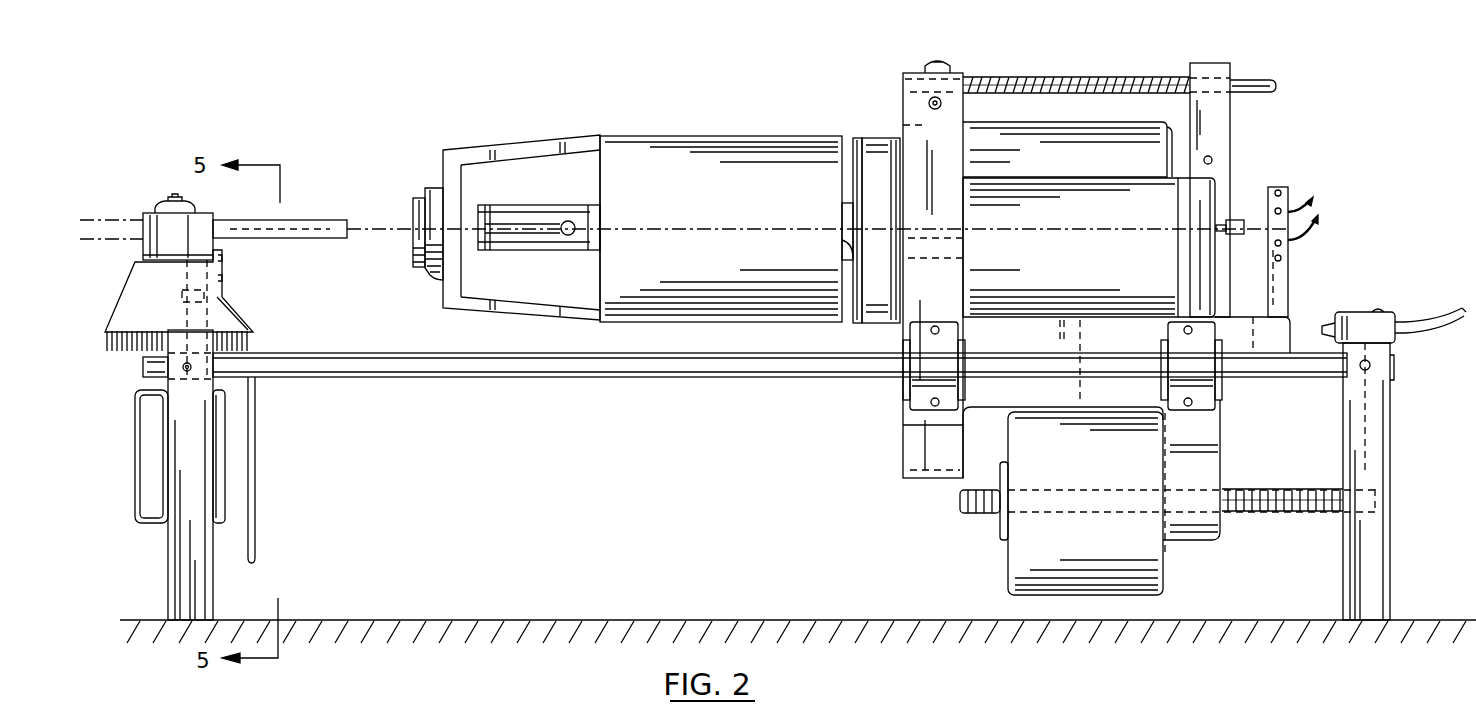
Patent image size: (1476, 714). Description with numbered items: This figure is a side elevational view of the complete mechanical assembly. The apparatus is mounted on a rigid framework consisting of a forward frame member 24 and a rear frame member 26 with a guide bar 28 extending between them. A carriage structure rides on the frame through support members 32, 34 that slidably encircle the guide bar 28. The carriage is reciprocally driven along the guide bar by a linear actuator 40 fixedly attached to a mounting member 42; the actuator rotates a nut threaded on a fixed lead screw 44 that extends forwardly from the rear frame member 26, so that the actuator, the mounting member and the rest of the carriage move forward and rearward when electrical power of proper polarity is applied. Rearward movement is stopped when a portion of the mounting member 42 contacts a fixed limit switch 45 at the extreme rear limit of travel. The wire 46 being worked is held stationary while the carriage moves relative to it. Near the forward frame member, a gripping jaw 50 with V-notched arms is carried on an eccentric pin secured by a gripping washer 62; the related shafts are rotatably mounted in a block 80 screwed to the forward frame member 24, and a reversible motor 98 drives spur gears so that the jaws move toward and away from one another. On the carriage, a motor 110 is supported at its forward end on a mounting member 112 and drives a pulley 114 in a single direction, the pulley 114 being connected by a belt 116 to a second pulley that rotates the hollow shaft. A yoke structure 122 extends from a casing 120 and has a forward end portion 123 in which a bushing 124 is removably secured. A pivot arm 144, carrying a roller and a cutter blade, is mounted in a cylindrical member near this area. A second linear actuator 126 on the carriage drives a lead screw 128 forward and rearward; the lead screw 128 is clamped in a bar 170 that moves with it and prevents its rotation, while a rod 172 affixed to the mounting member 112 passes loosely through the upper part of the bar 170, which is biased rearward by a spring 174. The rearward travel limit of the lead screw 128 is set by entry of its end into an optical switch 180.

The forward frame member 24 is at (168, 572).
The rear frame member 26 is at (1390, 576).
The guide bar 28 is at (598, 378).
The support member 32 is at (918, 378).
The support member 34 is at (1168, 352).
The linear actuator 40 is at (1030, 543).
The mounting member 42 is at (1210, 428).
The lead screw 44 is at (1296, 512).
The limit switch 45 is at (1318, 325).
The wire 46 is at (323, 218).
The gripping jaw 50 is at (150, 218).
The gripping washer 62 is at (165, 204).
The block 80 is at (132, 290).
The reversible motor 98 is at (142, 438).
The motor 110 is at (1032, 298).
The mounting member 112 is at (907, 125).
The pulley 114 is at (855, 316).
The belt 116 is at (888, 321).
The casing 120 is at (674, 160).
The yoke structure 122 is at (506, 150).
The forward end portion 123 is at (432, 282).
The bushing 124 is at (414, 266).
The linear actuator 126 is at (1067, 140).
The lead screw 128 is at (1240, 222).
The pivot arm 144 is at (562, 240).
The bar 170 is at (1210, 127).
The rod 172 is at (1250, 80).
The spring 174 is at (1045, 77).
The optical switch 180 is at (1283, 217).